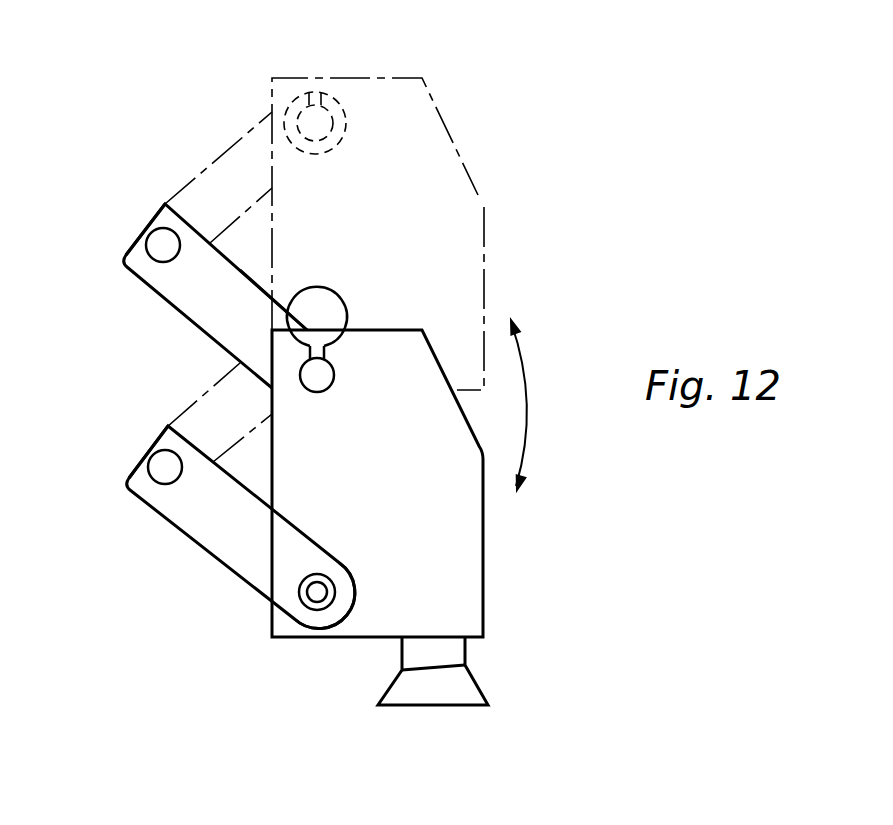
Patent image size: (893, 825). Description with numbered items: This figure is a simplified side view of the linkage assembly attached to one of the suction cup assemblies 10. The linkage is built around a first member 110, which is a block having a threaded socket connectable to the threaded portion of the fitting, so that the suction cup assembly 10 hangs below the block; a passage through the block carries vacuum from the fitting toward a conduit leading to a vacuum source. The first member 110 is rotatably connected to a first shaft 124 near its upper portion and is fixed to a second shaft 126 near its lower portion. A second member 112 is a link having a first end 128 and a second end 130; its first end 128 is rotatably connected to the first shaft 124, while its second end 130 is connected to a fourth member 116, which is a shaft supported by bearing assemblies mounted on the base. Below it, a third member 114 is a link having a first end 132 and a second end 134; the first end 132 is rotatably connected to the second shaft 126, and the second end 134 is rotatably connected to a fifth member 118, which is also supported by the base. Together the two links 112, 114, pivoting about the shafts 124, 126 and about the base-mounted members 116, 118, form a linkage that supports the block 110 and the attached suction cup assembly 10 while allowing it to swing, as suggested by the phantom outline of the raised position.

The suction cup assembly 10 is at (498, 668).
The first member 110 is at (484, 542).
The second member 112 is at (205, 329).
The third member 114 is at (219, 557).
The fourth member 116 is at (151, 258).
The fifth member 118 is at (153, 480).
The first shaft 124 is at (328, 391).
The second shaft 126 is at (324, 577).
The first end of second member 128 is at (296, 320).
The second end of second member 130 is at (136, 237).
The first end of third member 132 is at (352, 600).
The second end of third member 134 is at (141, 459).